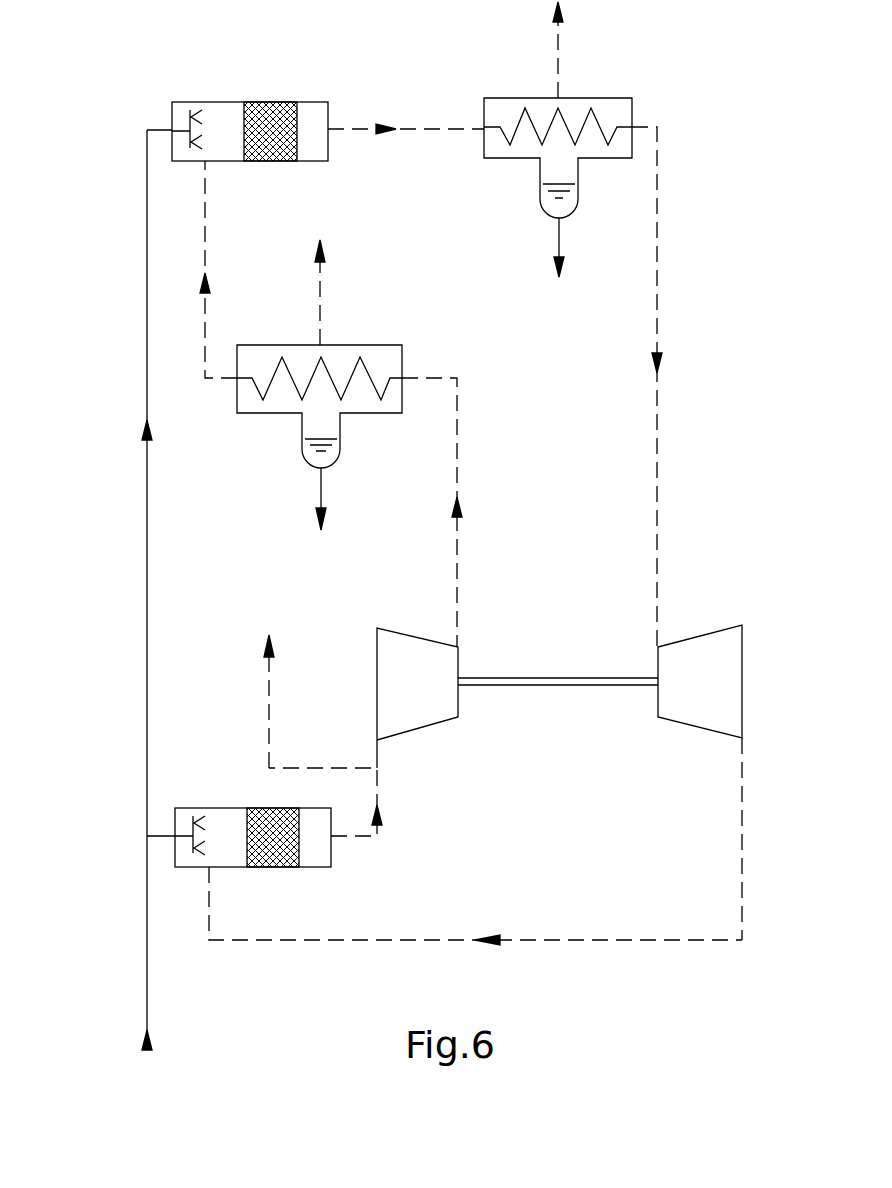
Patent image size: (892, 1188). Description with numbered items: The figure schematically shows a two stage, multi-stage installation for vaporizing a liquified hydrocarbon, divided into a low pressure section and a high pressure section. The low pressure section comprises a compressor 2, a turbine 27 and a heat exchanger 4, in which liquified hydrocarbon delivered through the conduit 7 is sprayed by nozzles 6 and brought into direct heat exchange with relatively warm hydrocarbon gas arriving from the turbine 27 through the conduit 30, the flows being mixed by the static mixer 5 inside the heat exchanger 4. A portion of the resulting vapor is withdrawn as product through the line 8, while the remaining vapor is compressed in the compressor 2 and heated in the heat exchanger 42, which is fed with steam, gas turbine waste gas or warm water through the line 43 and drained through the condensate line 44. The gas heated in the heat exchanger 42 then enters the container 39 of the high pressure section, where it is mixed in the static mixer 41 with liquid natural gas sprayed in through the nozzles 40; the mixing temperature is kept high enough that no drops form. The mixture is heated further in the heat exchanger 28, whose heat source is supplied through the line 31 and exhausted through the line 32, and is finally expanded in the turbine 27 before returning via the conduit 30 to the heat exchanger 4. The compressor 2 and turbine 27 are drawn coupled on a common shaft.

The compressor 2 is at (460, 668).
The heat exchanger 4 is at (225, 808).
The static mixer 5 is at (276, 867).
The nozzles 6 is at (195, 820).
The conduit 7 is at (148, 1003).
The line 8 is at (270, 698).
The turbine 27 is at (743, 690).
The heat exchanger 28 is at (612, 98).
The conduit 30 is at (425, 940).
The steam delivery line 31 is at (560, 52).
The condensate line 32 is at (560, 245).
The container 39 is at (240, 102).
The nozzles 40 is at (192, 117).
The static mixer 41 is at (273, 162).
The heat exchanger 42 is at (385, 343).
The steam delivery line 43 is at (322, 298).
The condensate line 44 is at (322, 498).